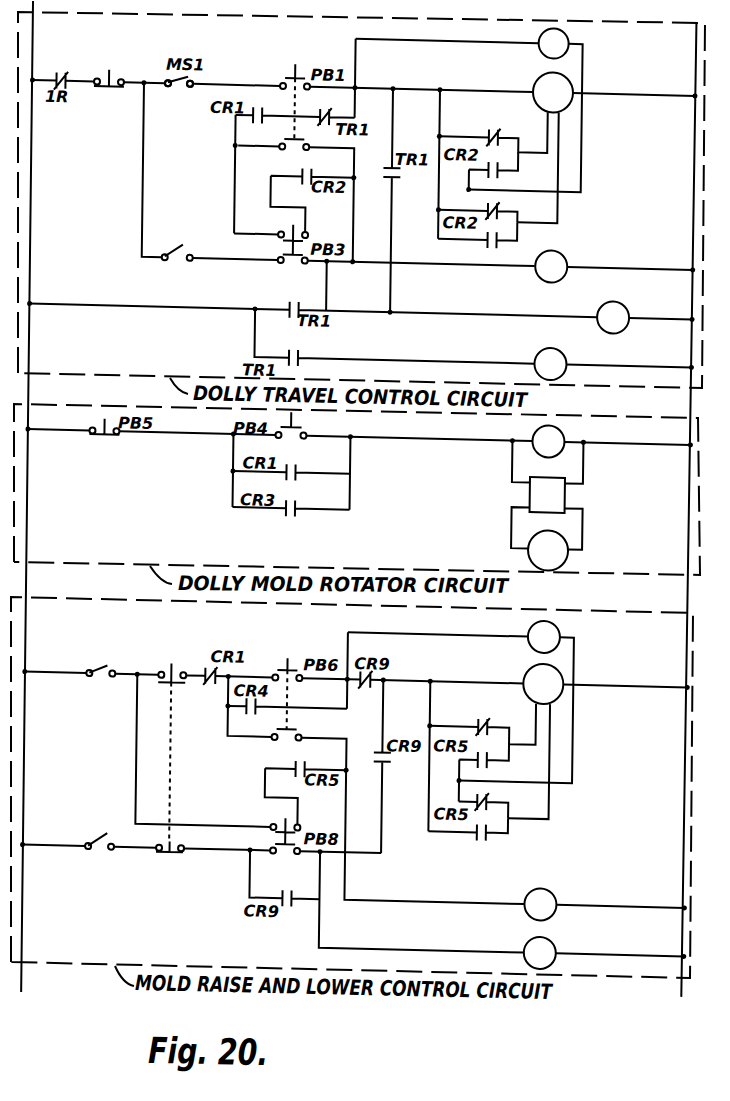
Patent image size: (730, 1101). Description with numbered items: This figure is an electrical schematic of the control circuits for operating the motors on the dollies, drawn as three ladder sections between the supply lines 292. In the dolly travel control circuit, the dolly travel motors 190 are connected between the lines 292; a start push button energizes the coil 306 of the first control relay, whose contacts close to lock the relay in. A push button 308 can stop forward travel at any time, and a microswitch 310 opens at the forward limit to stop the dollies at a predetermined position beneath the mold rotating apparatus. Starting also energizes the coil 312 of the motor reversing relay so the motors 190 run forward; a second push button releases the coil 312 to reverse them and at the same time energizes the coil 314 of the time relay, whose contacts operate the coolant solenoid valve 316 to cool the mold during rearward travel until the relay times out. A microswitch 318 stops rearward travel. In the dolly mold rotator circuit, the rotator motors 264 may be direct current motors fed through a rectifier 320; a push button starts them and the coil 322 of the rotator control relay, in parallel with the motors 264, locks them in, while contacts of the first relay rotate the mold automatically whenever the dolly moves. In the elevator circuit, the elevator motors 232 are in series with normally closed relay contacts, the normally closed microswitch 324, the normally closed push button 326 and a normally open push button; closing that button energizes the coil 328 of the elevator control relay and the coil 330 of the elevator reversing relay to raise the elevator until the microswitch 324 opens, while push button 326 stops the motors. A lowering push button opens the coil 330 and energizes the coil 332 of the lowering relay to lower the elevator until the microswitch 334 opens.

The dolly travel motors 190 is at (536, 90).
The elevator motors 232 is at (534, 662).
The dolly mold rotator motors 264 is at (574, 542).
The lines 292 is at (695, 499).
The coil of control relay CR1 306 is at (540, 39).
The push button 308 is at (99, 94).
The microswitch 310 is at (172, 89).
The coil of motor reversing relay CR2 312 is at (565, 245).
The coil of time relay TR1 314 is at (612, 320).
The coolant solenoid valve 316 is at (538, 348).
The microswitch 318 is at (176, 246).
The rectifier 320 is at (535, 486).
The coil of control relay CR3 322 is at (567, 424).
The microswitch 324 is at (108, 676).
The push button 326 is at (189, 681).
The coil of control relay CR4 328 is at (566, 620).
The coil of motor reversing relay CR5 330 is at (562, 882).
The coil of control relay CR9 332 is at (538, 932).
The microswitch 334 is at (118, 822).